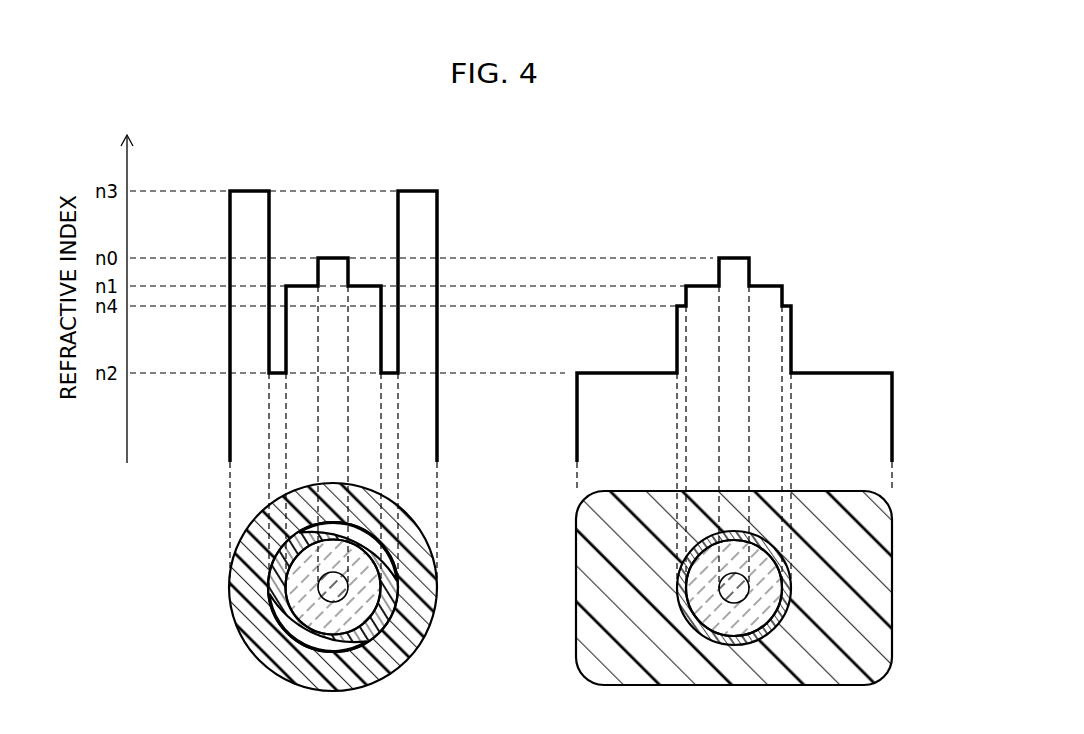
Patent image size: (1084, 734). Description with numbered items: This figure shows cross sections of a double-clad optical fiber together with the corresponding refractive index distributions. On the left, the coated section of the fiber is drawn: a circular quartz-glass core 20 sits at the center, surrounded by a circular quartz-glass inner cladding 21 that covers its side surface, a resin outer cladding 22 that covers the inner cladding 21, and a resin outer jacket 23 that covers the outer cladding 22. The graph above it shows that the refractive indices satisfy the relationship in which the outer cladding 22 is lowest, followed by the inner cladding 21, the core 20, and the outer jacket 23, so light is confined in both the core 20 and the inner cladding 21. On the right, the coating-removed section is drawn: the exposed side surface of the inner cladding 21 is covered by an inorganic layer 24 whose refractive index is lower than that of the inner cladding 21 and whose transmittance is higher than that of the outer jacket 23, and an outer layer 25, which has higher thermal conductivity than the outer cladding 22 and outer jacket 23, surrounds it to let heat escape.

The core 20 is at (350, 588).
The inner cladding 21 is at (287, 587).
The outer cladding 22 is at (393, 617).
The outer jacket 23 is at (242, 640).
The inorganic layer 24 is at (677, 588).
The outer layer 25 is at (576, 637).